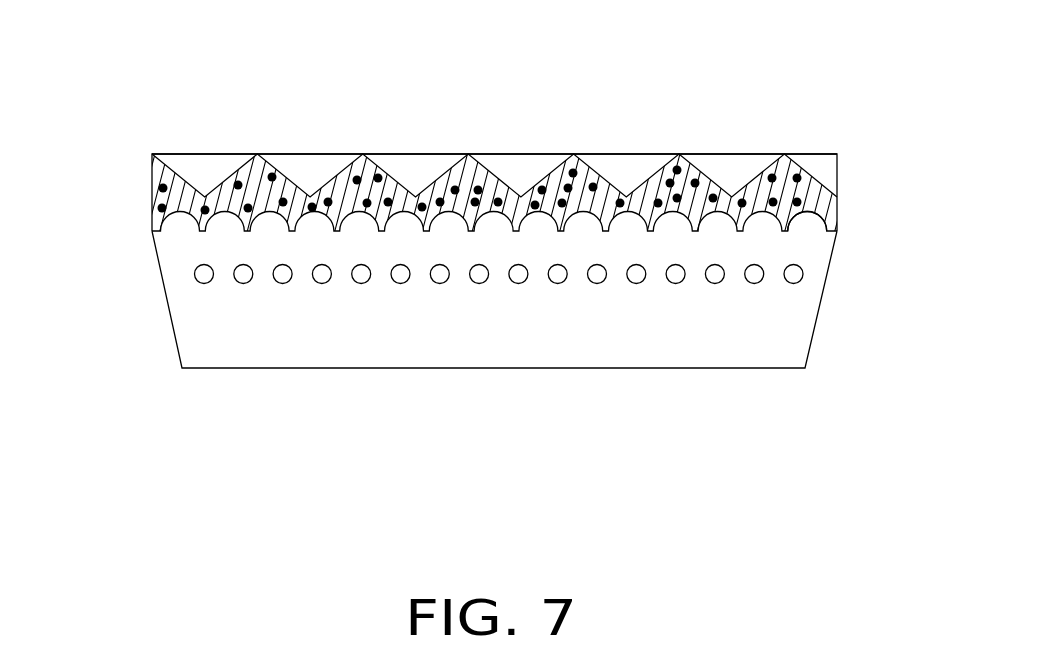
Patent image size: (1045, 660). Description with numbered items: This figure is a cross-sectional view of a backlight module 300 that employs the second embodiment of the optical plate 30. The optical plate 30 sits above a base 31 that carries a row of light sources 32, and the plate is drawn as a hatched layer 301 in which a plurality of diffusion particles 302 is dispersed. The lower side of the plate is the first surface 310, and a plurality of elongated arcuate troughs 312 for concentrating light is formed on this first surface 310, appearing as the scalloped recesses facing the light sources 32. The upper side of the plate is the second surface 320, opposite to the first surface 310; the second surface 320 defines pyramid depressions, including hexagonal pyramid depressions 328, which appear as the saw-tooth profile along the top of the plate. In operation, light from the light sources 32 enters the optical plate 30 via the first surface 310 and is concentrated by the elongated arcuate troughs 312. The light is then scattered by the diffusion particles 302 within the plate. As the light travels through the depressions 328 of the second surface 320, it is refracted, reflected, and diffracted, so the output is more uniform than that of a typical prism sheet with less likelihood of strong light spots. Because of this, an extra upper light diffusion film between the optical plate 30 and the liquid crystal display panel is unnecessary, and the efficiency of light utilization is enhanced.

The backlight module 300 is at (649, 104).
The optical plate 30 is at (137, 182).
The base substrate 31 is at (813, 330).
The light sources 32 is at (799, 279).
The diffusion layer 301 is at (837, 200).
The diffusion particles 302 is at (798, 172).
The first surface 310 is at (195, 240).
The elongated arcuate troughs 312 is at (807, 225).
The second surface 320 is at (362, 150).
The hexagonal pyramid depressions 328 is at (523, 170).